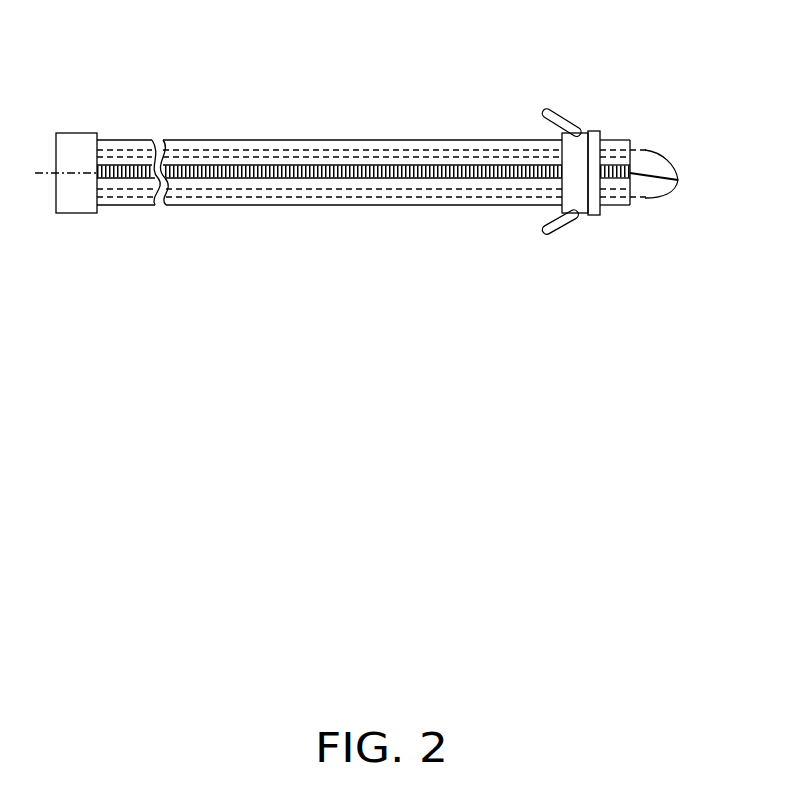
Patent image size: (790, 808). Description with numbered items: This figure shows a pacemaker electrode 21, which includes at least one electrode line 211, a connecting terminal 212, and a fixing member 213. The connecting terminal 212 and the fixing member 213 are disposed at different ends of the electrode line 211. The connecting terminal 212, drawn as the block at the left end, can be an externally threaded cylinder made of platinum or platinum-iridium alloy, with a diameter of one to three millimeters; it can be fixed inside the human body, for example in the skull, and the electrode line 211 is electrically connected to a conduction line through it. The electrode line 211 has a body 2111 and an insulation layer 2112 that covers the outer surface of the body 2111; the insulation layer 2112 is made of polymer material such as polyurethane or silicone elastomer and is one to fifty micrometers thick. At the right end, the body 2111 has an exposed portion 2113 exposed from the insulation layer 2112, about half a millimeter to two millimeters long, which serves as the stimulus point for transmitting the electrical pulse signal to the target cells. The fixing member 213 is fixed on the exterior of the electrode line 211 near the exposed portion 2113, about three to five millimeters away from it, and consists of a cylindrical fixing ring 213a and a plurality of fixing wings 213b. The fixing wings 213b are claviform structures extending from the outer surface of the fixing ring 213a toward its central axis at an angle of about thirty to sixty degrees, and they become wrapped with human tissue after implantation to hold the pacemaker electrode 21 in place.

The pacemaker electrode 21 is at (249, 58).
The electrode line 211 is at (298, 207).
The body 2111 is at (403, 195).
The insulation layer 2112 is at (441, 200).
The exposed portion 2113 is at (678, 180).
The connecting terminal 212 is at (76, 138).
The fixing member 213 is at (660, 39).
The fixing ring 213a is at (597, 132).
The fixing wings 213b is at (553, 118).